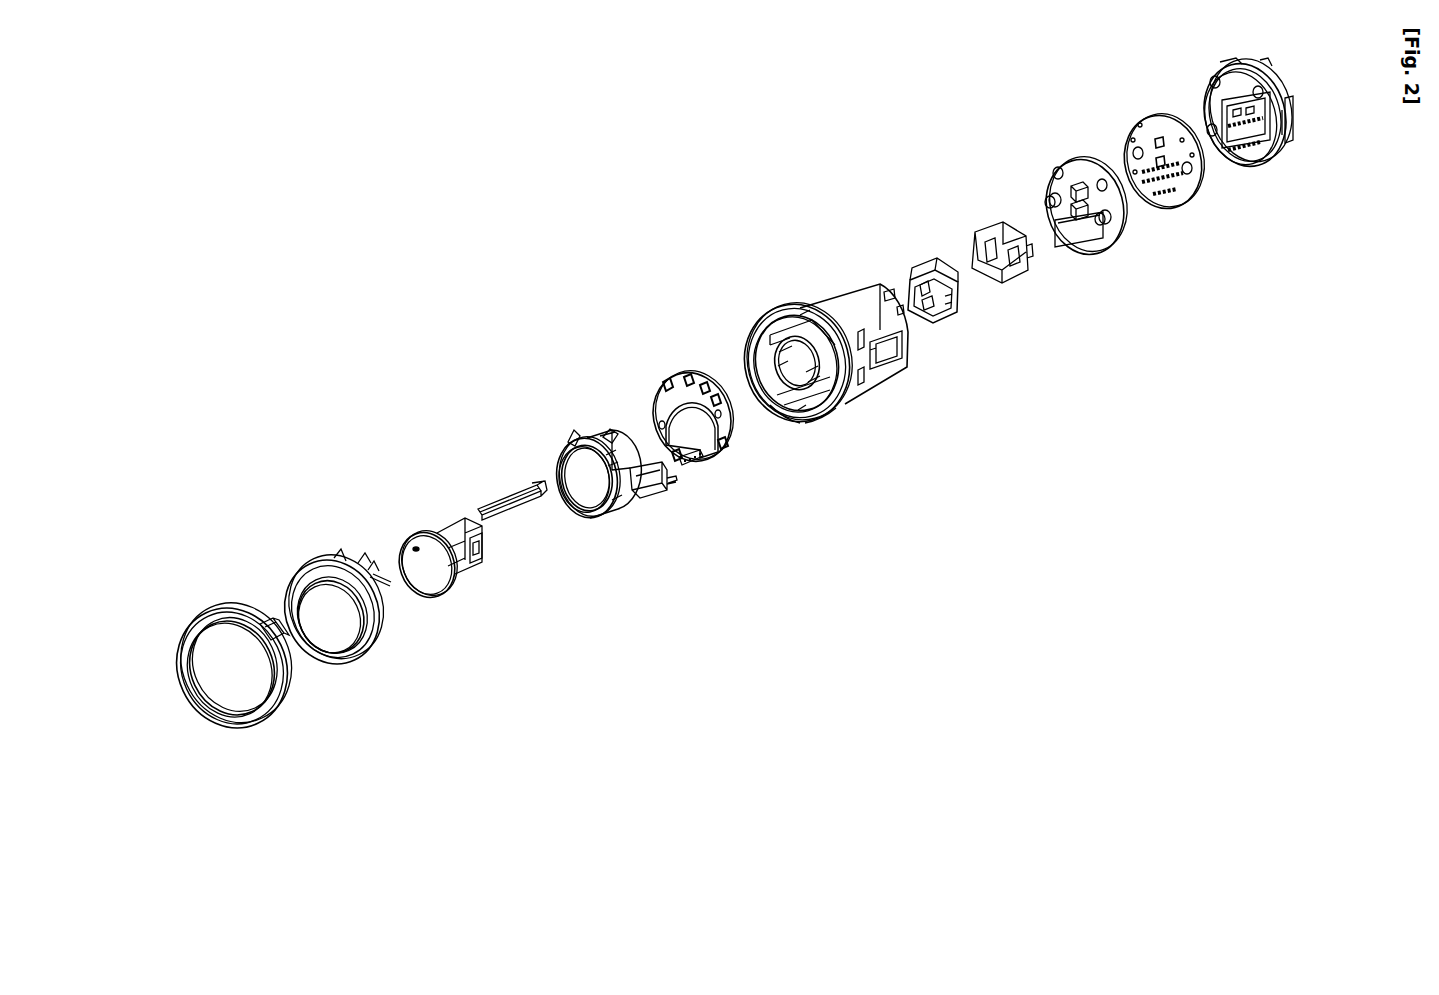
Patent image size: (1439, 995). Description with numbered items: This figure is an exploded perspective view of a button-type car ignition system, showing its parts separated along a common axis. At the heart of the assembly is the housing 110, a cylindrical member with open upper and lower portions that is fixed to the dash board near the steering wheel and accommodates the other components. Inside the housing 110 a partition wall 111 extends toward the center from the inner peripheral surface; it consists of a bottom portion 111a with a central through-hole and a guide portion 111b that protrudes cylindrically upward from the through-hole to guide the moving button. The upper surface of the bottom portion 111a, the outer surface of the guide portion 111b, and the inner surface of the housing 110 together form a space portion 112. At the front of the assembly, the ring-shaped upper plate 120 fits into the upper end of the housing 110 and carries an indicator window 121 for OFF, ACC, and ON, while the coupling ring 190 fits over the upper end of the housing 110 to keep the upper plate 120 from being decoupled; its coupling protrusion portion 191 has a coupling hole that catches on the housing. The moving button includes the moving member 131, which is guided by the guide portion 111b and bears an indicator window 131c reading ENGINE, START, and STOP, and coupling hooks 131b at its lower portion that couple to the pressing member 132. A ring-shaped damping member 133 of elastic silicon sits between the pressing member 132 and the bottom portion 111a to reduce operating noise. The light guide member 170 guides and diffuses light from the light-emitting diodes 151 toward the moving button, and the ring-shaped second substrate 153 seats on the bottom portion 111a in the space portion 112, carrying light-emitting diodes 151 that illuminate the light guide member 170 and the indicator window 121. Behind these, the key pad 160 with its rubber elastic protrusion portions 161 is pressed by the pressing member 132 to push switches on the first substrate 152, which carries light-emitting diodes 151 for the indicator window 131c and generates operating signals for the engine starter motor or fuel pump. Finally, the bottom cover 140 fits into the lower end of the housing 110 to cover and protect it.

The housing 110 is at (819, 381).
The partition wall 111 is at (840, 483).
The bottom portion 111a is at (825, 420).
The guide portion 111b is at (791, 422).
The space portion 112 is at (783, 330).
The upper plate 120 is at (321, 631).
The indicator window 121 is at (332, 557).
The moving member 131 is at (442, 582).
The coupling hooks 131b is at (470, 578).
The indicator window 131c is at (405, 548).
The pressing member 132 is at (990, 230).
The damping member 133 is at (920, 268).
The bottom cover 140 is at (1290, 132).
The light-emitting diodes 151 is at (888, 301).
The first substrate 152 is at (1173, 207).
The second substrate 153 is at (708, 465).
The key pad 160 is at (1068, 188).
The elastic protrusion portions 161 is at (1048, 201).
The light guide member 170 is at (623, 510).
The coupling ring 190 is at (205, 727).
The coupling protrusion portion 191 is at (270, 626).